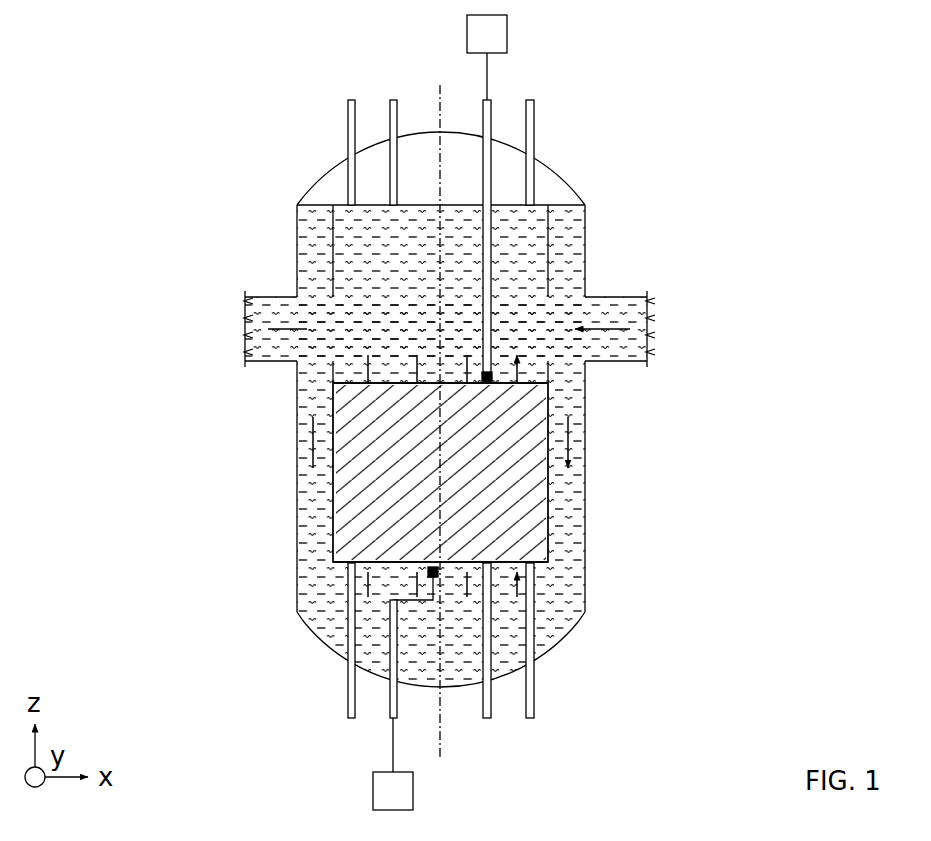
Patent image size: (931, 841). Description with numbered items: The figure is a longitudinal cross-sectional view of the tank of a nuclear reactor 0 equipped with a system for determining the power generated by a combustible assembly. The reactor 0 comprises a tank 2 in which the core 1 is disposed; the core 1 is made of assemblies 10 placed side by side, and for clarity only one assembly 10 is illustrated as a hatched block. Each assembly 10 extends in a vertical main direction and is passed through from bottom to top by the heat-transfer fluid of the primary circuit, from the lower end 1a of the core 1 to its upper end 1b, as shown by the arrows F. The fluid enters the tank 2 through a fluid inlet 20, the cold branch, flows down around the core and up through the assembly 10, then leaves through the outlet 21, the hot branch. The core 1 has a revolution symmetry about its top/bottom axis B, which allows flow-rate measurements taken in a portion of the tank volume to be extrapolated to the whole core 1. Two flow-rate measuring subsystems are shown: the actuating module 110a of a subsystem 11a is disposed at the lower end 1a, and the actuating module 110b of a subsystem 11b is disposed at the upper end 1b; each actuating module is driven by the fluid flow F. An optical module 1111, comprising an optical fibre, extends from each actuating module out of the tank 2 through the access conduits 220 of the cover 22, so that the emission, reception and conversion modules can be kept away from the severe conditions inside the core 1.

The nuclear reactor 0 is at (285, 138).
The core 1 is at (470, 482).
The lower end of the core 1a is at (388, 563).
The upper end of the core 1b is at (402, 382).
The tank 2 is at (585, 560).
The assembly 10 is at (489, 517).
The subsystem for measuring the flow rate 11a is at (328, 778).
The subsystem for measuring the flow rate 11b is at (552, 53).
The fluid inlet 20 is at (625, 318).
The outlet 21 is at (282, 352).
The cover 22 is at (570, 190).
The actuating module 110a is at (430, 569).
The actuating module 110b is at (491, 379).
The access conduits 220 is at (529, 94).
The optical module 1111 is at (489, 80).
The axis of revolution B is at (440, 85).
The arrows indicating fluid flow F is at (365, 358).